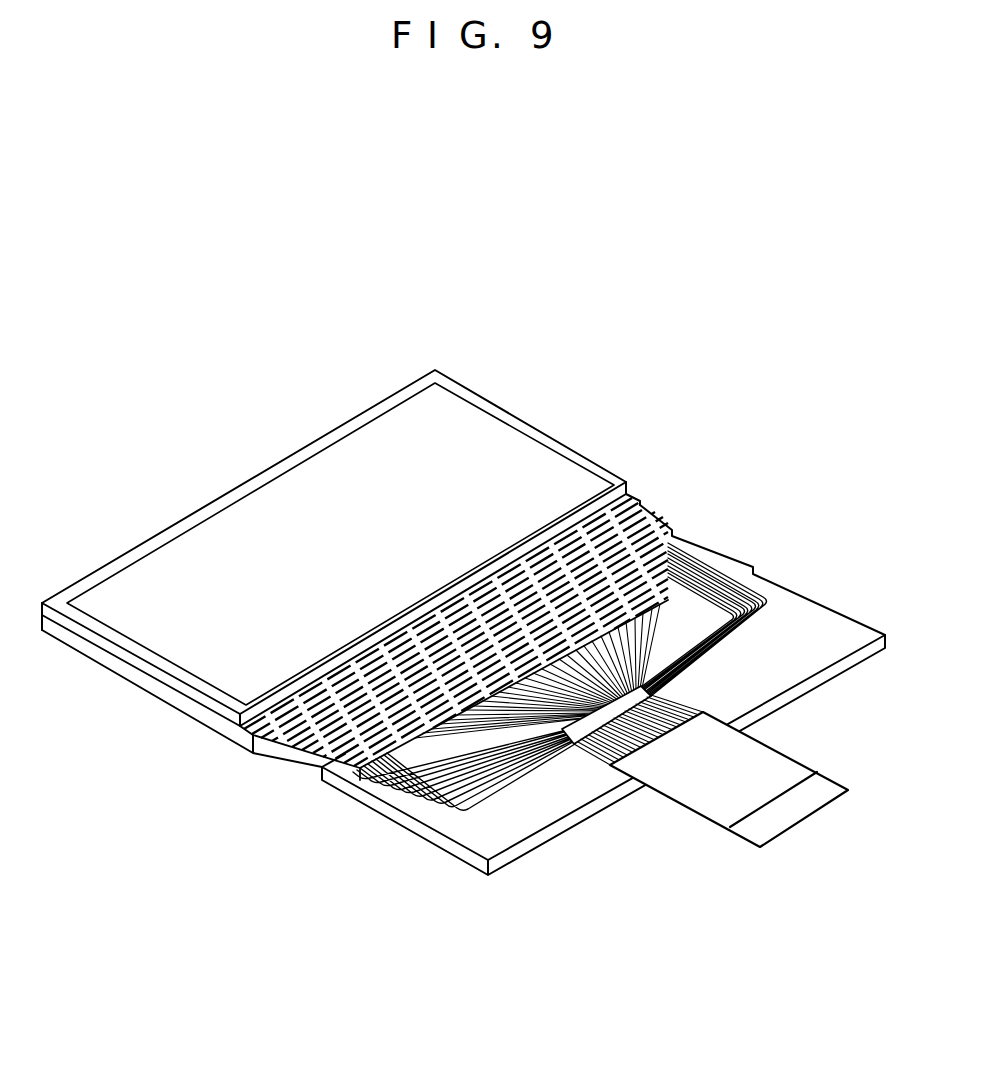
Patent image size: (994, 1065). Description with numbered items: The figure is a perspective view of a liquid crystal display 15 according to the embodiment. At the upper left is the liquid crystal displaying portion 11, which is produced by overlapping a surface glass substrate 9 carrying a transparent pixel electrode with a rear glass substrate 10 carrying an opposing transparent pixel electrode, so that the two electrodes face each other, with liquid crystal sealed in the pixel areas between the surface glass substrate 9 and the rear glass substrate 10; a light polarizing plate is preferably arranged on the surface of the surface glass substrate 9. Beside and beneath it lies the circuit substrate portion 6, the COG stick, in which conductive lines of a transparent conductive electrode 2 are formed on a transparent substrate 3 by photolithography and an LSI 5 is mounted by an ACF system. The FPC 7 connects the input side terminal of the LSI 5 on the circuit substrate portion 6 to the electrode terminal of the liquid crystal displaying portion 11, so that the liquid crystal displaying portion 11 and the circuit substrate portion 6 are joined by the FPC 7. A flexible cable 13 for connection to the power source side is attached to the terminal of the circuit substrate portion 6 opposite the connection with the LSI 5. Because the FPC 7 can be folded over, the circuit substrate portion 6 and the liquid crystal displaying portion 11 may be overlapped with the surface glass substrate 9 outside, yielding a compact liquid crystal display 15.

The transparent conductive electrode 2 is at (753, 567).
The transparent substrate 3 is at (570, 820).
The LSI 5 is at (653, 693).
The circuit substrate portion 6 is at (564, 702).
The FPC 7 is at (670, 530).
The surface glass substrate 9 is at (525, 423).
The rear glass substrate 10 is at (187, 716).
The liquid crystal displaying portion 11 is at (368, 543).
The flexible cable 13 is at (840, 832).
The liquid crystal display 15 is at (341, 622).